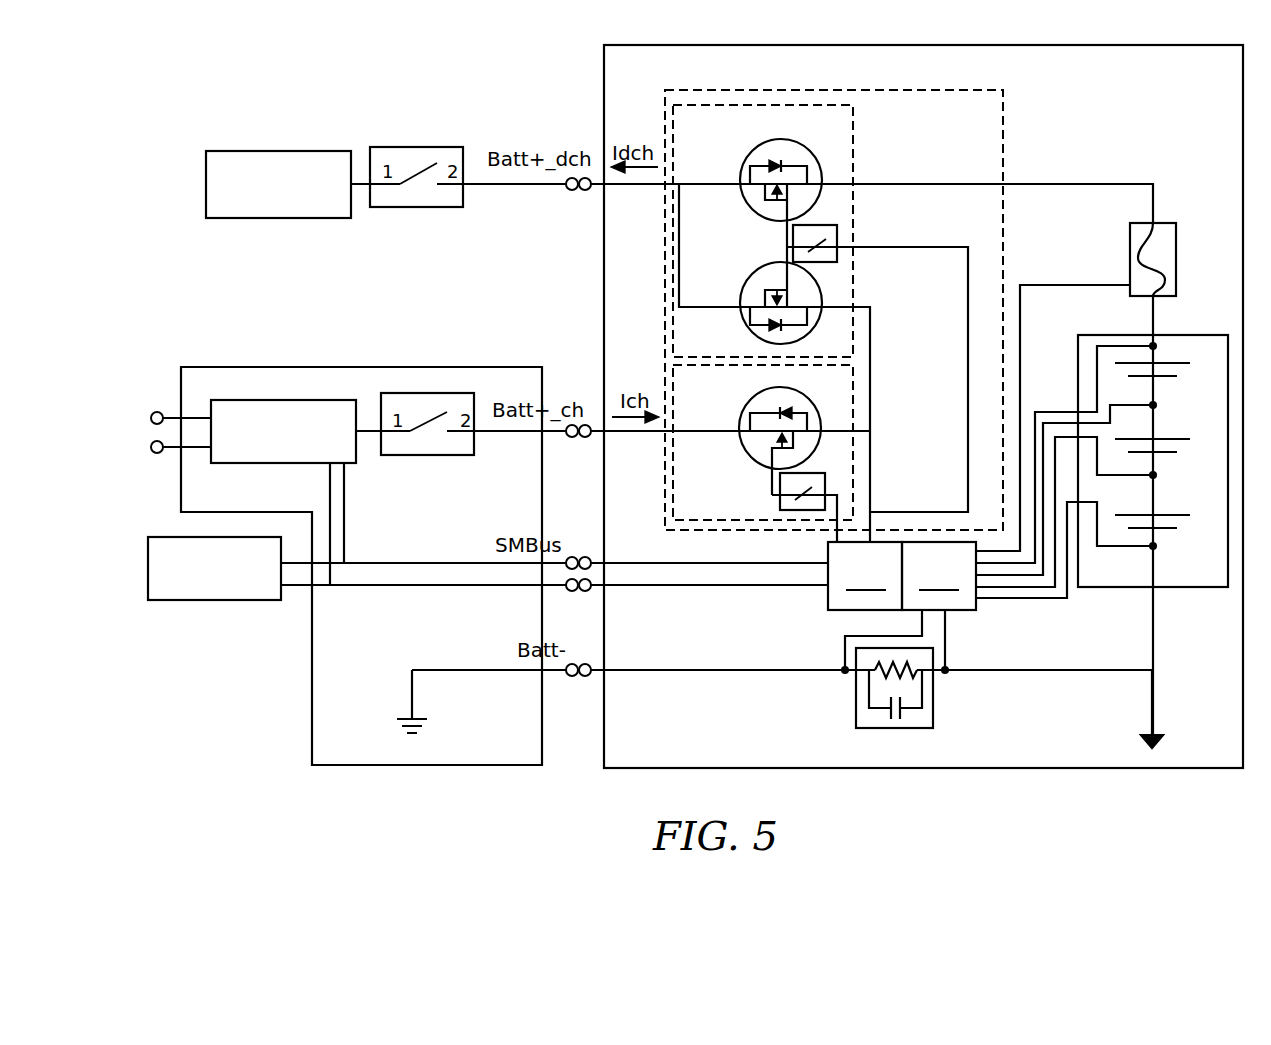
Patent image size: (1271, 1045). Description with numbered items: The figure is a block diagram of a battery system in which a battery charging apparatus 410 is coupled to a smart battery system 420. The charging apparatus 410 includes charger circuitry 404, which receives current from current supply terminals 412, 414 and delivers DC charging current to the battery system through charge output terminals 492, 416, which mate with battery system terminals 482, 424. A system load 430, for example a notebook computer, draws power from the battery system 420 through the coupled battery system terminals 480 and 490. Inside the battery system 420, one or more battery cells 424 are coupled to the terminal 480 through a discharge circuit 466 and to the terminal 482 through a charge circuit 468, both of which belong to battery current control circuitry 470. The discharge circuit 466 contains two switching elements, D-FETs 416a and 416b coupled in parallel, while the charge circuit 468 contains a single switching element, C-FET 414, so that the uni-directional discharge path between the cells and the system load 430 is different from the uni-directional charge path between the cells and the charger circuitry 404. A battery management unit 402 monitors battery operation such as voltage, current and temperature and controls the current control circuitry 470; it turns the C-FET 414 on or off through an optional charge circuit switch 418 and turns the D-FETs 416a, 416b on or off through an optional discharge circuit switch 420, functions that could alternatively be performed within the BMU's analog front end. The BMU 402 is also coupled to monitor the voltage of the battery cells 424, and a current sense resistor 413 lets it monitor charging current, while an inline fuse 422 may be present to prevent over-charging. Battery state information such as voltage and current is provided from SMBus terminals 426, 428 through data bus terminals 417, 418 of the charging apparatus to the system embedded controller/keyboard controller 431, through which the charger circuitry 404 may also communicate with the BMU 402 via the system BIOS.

The battery management unit 402 is at (828, 606).
The charger circuitry 404 is at (310, 463).
The battery charging apparatus 410 is at (335, 367).
The current supply terminal 412 is at (154, 413).
The current sense resistor 413 is at (935, 715).
The C-FET 414 is at (742, 445).
The charge output terminal 416 is at (571, 677).
The D-FET 416a is at (757, 218).
The D-FET 416b is at (750, 280).
The data bus terminal 417 is at (573, 557).
The charge circuit switch 418 is at (780, 503).
The smart battery system 420 is at (603, 78).
The inline fuse 422 is at (1130, 258).
The battery cells 424 is at (1125, 590).
The SMBus terminal 426 is at (591, 558).
The SMBus terminal 428 is at (591, 591).
The system load 430 is at (285, 218).
The embedded controller/keyboard controller 431 is at (233, 603).
The discharge circuit 466 is at (855, 153).
The charge circuit 468 is at (853, 473).
The battery current control circuitry 470 is at (1004, 122).
The battery system terminal 480 is at (583, 192).
The battery system terminal 482 is at (590, 437).
The battery system terminal 490 is at (567, 192).
The charge output terminal 492 is at (565, 437).